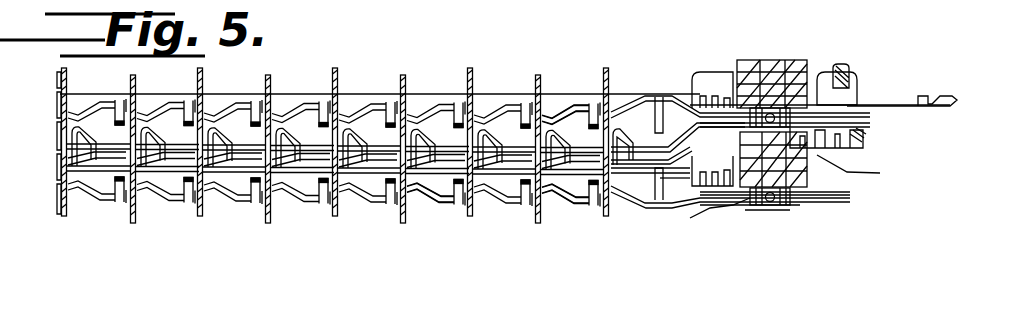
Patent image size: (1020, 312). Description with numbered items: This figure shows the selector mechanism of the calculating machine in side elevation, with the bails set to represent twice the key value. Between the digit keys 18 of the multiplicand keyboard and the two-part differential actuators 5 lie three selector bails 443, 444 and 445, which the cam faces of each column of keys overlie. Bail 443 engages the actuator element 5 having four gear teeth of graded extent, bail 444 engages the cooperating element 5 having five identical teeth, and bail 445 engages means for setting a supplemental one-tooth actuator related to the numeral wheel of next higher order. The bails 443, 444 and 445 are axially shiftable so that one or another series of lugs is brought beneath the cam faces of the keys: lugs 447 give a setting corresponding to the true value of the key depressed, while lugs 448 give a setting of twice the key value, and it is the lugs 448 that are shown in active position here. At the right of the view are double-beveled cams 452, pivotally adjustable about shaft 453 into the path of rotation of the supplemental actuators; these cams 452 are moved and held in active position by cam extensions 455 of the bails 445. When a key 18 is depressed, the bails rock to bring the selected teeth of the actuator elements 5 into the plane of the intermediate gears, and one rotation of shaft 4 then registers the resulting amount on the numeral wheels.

The digit keys 18 is at (202, 217).
The lugs 447 is at (552, 150).
The selector bail 445 is at (643, 133).
The lugs 448 is at (408, 197).
The selector bail 444 is at (640, 160).
The selector bail 443 is at (665, 182).
The differential actuator 5 is at (728, 90).
The shaft 453 is at (841, 64).
The double-beveled cams 452 is at (918, 97).
The cam extensions 455 is at (866, 122).
The shaft 4 is at (750, 229).